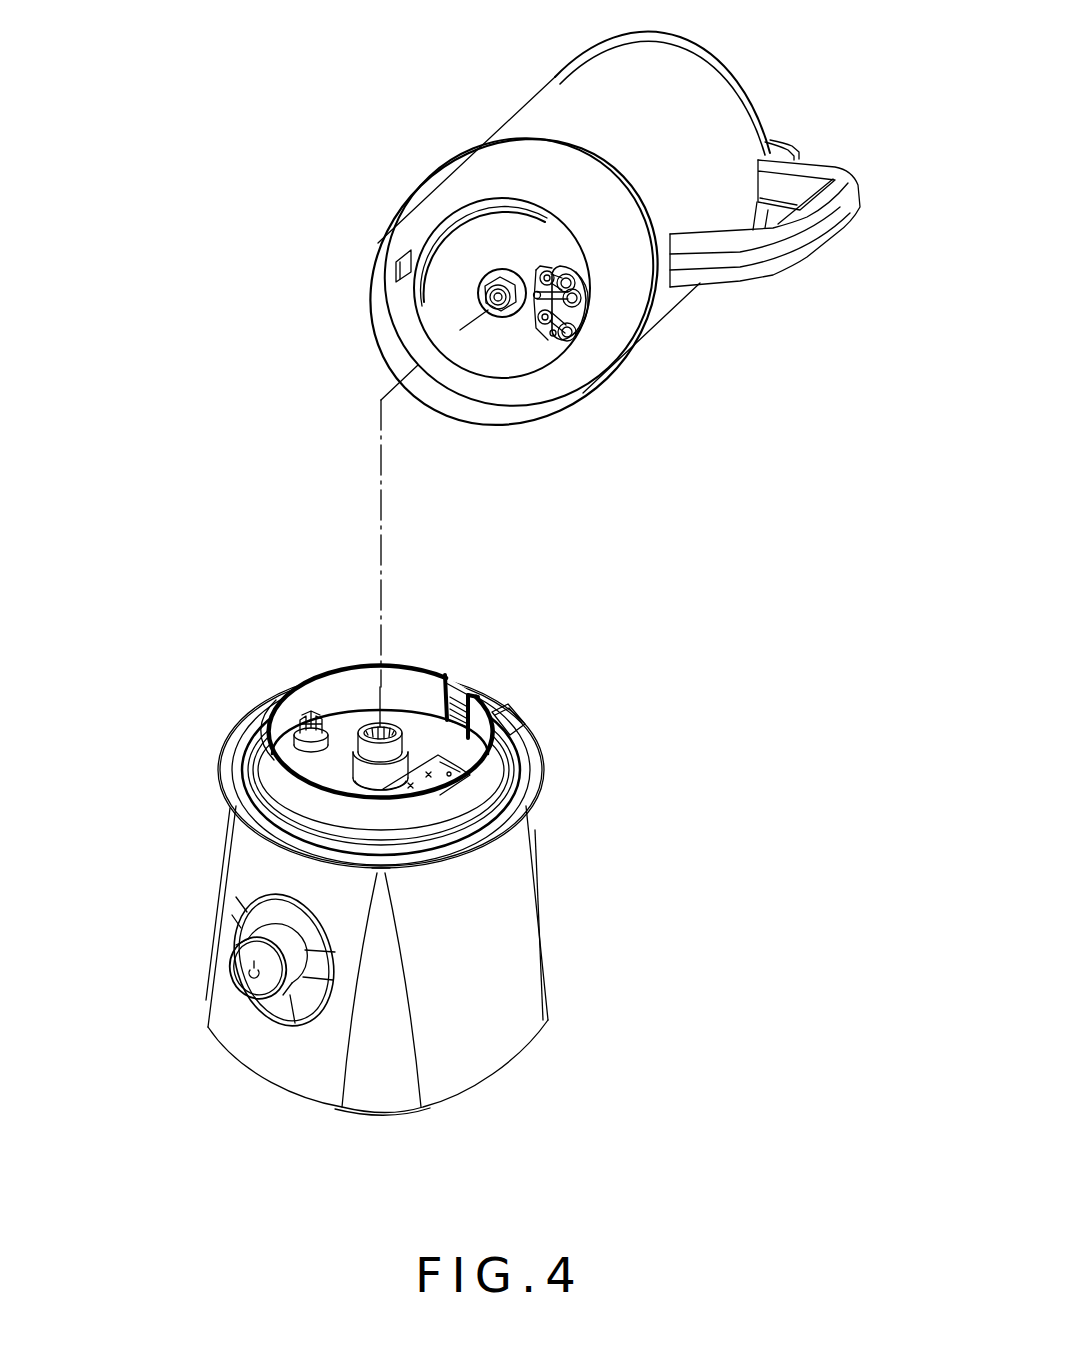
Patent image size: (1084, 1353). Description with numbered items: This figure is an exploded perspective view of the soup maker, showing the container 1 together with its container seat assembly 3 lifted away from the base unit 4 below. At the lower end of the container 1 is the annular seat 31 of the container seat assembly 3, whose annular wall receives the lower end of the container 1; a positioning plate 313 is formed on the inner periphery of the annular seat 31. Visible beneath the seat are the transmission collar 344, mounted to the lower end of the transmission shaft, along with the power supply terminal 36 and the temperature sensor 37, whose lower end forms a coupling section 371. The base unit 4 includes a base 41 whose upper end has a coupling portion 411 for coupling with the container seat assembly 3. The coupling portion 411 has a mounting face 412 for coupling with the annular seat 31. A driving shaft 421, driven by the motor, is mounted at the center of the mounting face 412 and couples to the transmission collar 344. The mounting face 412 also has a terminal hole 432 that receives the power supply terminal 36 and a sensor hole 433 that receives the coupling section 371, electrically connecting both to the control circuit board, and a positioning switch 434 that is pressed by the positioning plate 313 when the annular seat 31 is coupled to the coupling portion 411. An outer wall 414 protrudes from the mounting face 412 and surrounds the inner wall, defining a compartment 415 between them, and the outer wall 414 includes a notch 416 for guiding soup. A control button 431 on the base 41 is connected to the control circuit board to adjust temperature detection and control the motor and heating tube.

The container 1 is at (722, 94).
The container seat assembly 3 is at (627, 367).
The annular seat 31 is at (627, 318).
The positioning plate 313 is at (396, 284).
The transmission collar 344 is at (478, 290).
The power supply terminal 36 is at (571, 343).
The temperature sensor 37 is at (548, 330).
The coupling section 371 is at (540, 327).
The base unit 4 is at (376, 843).
The base 41 is at (512, 938).
The coupling portion 411 is at (237, 691).
The mounting face 412 is at (308, 758).
The outer wall 414 is at (542, 748).
The compartment 415 is at (500, 716).
The notch 416 is at (493, 707).
The driving shaft 421 is at (388, 727).
The control button 431 is at (247, 977).
The terminal hole 432 is at (455, 778).
The sensor hole 433 is at (447, 767).
The positioning switch 434 is at (302, 716).